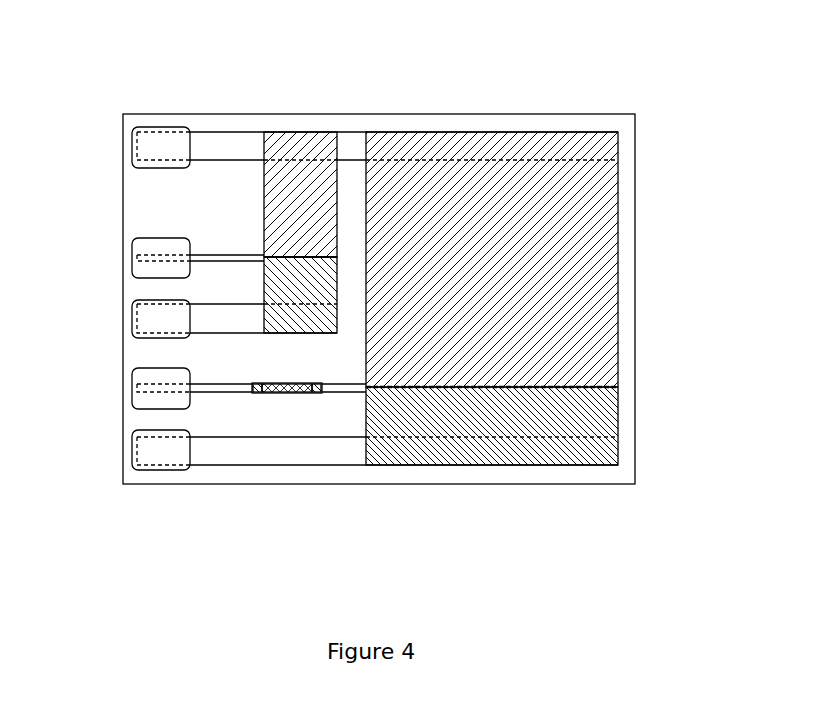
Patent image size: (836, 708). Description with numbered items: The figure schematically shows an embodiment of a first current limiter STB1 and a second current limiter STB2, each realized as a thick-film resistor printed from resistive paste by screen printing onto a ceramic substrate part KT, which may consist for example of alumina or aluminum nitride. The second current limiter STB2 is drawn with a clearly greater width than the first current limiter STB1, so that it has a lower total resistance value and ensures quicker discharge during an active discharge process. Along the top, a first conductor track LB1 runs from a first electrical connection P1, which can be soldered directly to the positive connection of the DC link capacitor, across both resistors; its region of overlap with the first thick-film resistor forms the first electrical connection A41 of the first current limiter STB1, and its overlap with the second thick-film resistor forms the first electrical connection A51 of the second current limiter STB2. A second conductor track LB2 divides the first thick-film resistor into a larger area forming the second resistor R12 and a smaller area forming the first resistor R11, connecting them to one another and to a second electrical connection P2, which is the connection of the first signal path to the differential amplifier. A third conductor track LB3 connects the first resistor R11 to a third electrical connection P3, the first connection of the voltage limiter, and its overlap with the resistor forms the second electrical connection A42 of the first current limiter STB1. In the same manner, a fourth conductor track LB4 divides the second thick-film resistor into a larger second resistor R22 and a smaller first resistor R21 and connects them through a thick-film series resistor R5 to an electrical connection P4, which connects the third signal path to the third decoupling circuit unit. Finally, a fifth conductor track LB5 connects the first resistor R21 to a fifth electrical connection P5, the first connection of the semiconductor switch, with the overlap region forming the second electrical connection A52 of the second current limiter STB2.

The ceramic substrate part KT is at (583, 114).
The first electrical connection P1 is at (131, 152).
The second electrical connection P2 is at (131, 263).
The third electrical connection P3 is at (131, 327).
The electrical connection P4 is at (131, 398).
The fifth electrical connection P5 is at (131, 462).
The first conductor track LB1 is at (213, 150).
The second conductor track LB2 is at (217, 253).
The third conductor track LB3 is at (218, 312).
The fourth conductor track LB4 is at (340, 390).
The fifth conductor track LB5 is at (267, 447).
The series resistor R5 is at (345, 389).
The first electrical connection of the first current limiter A41 is at (321, 178).
The second resistor of the first current limiter R12 is at (298, 207).
The first resistor of the first current limiter R11 is at (311, 280).
The first current limiter STB1 is at (539, 208).
The second resistor of the second current limiter R22 is at (603, 250).
The first electrical connection of the second current limiter A51 is at (467, 152).
The second current limiter STB2 is at (585, 422).
The first resistor of the second current limiter R21 is at (598, 452).
The second electrical connection of the second current limiter A52 is at (615, 462).
The second electrical connection of the first current limiter A42 is at (285, 313).